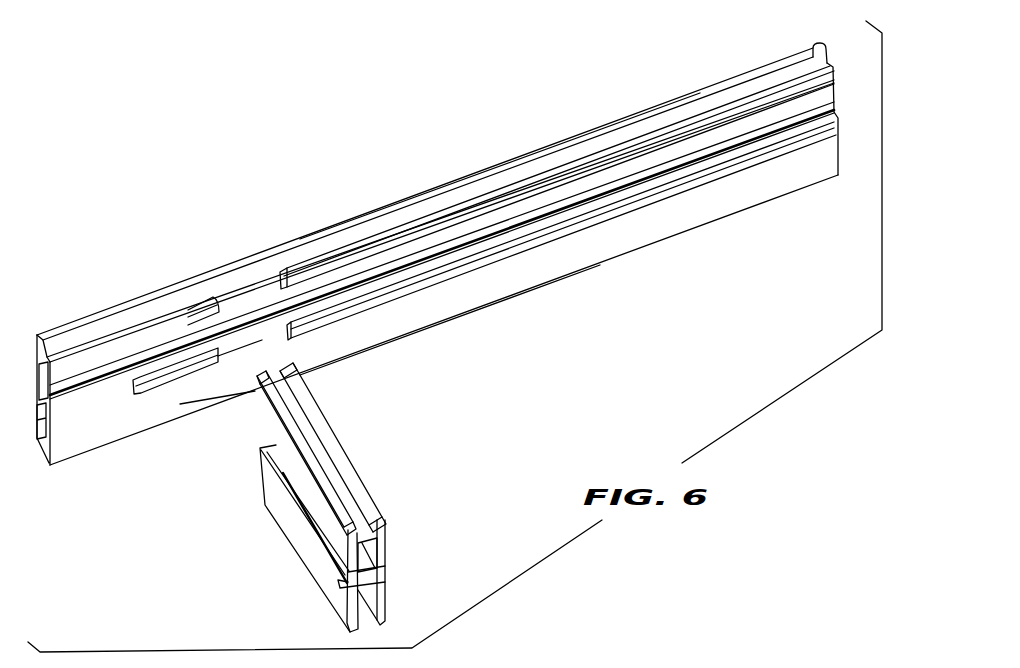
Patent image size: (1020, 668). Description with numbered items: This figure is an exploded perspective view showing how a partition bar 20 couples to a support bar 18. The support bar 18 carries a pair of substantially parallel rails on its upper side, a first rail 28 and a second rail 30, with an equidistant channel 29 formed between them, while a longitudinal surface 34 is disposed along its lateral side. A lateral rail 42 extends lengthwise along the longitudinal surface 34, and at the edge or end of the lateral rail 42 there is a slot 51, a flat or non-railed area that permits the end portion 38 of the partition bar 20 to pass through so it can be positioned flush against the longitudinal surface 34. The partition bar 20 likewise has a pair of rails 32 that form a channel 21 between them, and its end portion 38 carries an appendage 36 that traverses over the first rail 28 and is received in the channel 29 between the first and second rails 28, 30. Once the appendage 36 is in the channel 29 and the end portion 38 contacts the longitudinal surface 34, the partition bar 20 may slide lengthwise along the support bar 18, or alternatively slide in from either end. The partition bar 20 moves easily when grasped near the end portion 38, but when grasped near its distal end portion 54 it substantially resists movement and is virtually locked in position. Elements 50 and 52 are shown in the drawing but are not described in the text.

The support bar 18 is at (500, 157).
The partition bar 20 is at (319, 497).
The channel 21 is at (357, 512).
The first rail 28 is at (322, 250).
The equidistant channel 29 is at (828, 48).
The second rail 30 is at (405, 198).
The rails 32 is at (307, 450).
The longitudinal surface 34 is at (510, 273).
The appendage 36 is at (253, 401).
The end portion 38 is at (265, 436).
The lateral rail 42 is at (615, 216).
The latch tab 50 is at (255, 345).
The slot 51 is at (97, 428).
The short insert bar 52 is at (236, 299).
The distal end portion 54 is at (385, 560).